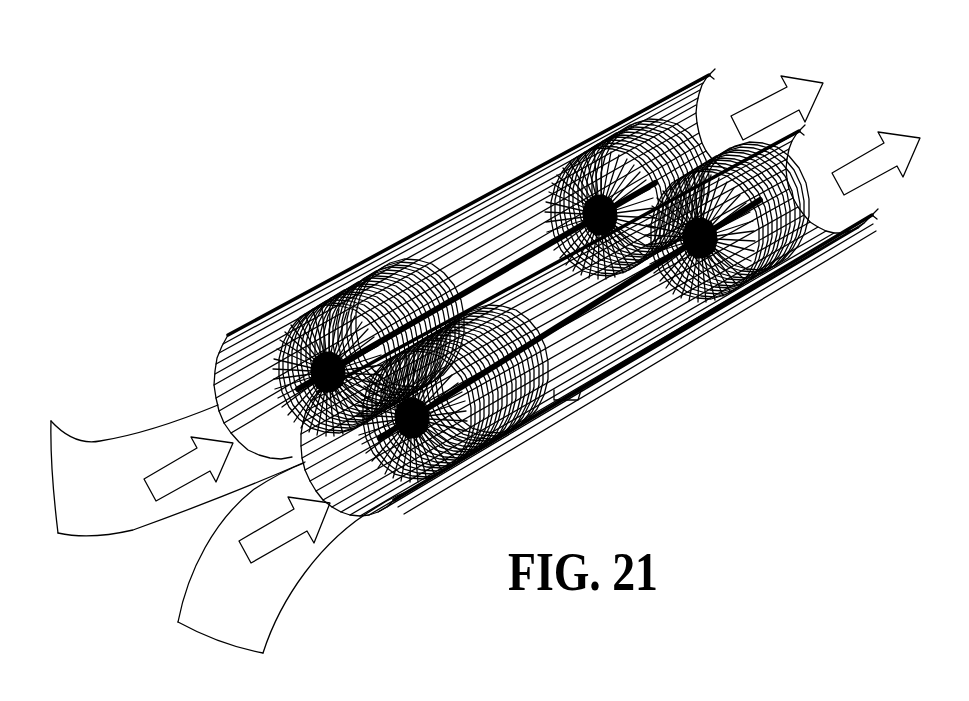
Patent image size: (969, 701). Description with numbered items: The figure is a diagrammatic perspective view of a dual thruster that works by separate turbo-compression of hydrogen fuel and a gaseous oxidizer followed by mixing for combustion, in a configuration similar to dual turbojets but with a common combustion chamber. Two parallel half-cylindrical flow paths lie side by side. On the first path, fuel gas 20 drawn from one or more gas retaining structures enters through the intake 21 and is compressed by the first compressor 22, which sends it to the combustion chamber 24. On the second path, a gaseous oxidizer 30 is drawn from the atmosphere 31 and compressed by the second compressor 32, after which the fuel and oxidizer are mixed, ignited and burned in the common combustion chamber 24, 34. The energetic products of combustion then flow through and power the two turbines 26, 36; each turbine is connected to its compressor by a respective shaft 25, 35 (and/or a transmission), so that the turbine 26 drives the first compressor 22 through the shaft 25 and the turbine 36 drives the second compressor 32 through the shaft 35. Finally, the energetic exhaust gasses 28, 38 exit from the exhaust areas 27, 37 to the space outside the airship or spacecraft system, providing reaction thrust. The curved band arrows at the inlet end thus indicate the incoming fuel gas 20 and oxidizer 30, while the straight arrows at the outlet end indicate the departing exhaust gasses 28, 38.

The fuel gas 20 is at (172, 460).
The intake 21 is at (236, 380).
The first compressor 22 is at (282, 320).
The combustion chamber 24 is at (437, 273).
The shaft 25 is at (512, 257).
The turbine 26 is at (562, 157).
The exhaust area 27 is at (677, 97).
The exhaust gasses 28 is at (800, 100).
The gaseous oxidizer 30 is at (307, 540).
The atmosphere intake 31 is at (355, 490).
The second compressor 32 is at (403, 480).
The common combustion chamber 34 is at (580, 348).
The shaft 35 is at (637, 333).
The turbine 36 is at (682, 300).
The exhaust area 37 is at (768, 280).
The exhaust gasses 38 is at (900, 152).